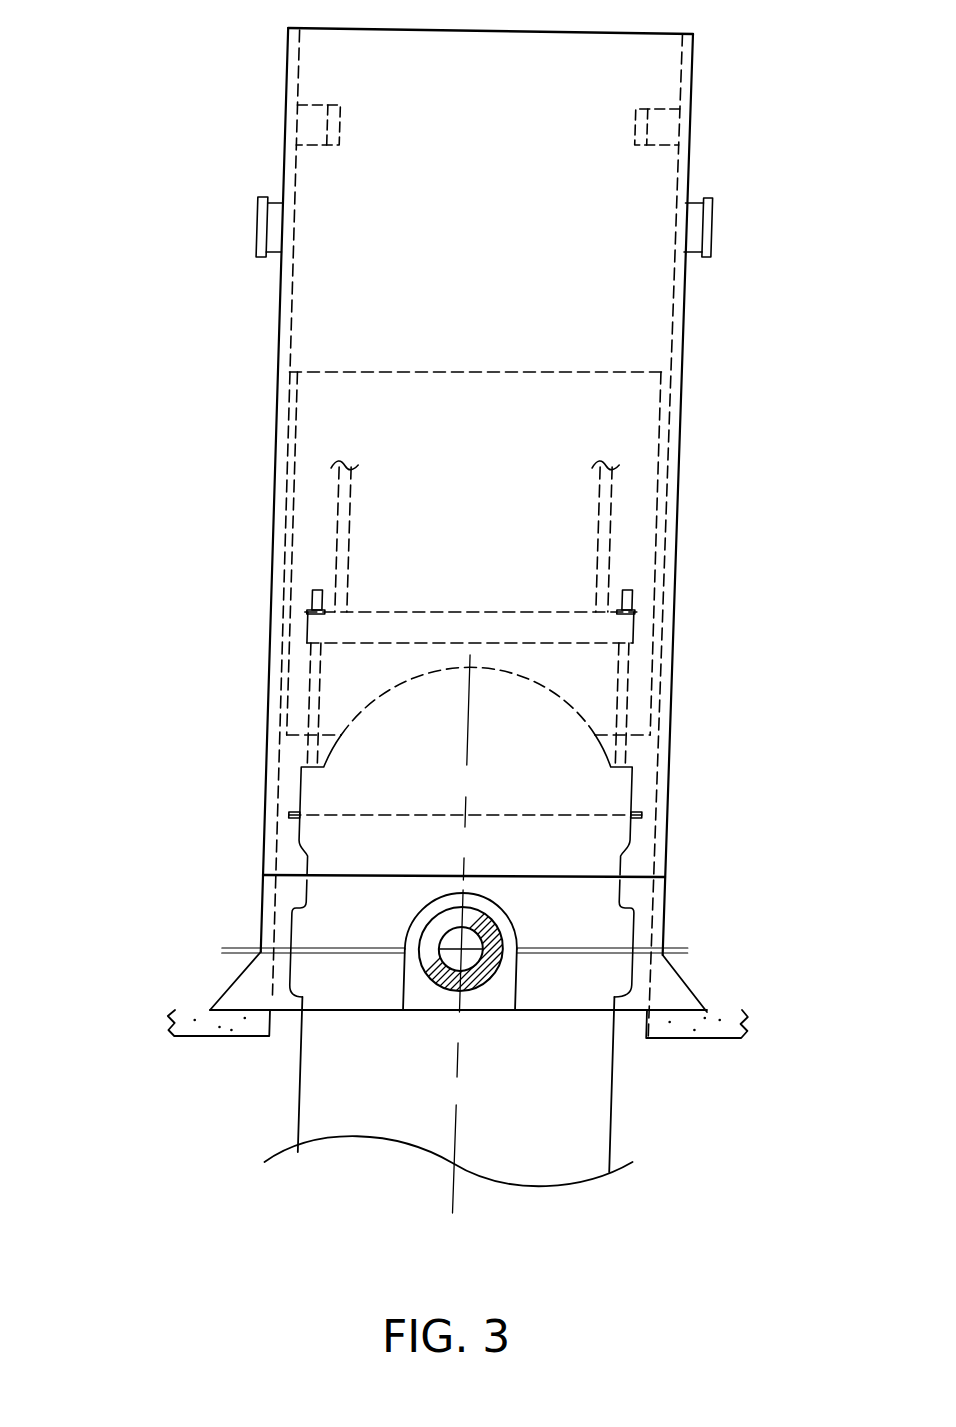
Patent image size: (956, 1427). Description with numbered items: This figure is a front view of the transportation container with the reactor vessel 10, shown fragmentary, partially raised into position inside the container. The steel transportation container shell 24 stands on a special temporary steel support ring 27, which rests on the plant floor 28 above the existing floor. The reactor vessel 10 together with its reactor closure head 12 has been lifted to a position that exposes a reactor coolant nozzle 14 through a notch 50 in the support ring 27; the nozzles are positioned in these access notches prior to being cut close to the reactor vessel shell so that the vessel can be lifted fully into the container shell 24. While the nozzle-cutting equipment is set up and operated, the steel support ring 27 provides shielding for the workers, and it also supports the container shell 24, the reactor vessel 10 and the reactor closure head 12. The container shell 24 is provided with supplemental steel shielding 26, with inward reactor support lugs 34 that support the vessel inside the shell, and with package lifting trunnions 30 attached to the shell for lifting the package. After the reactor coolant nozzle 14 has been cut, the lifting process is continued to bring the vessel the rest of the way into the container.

The reactor vessel 10 is at (300, 1115).
The reactor closure head 12 is at (318, 793).
The reactor coolant nozzle 14 is at (497, 933).
The transportation container shell 24 is at (278, 317).
The supplemental steel shielding 26 is at (658, 545).
The special temporary support ring 27 is at (223, 982).
The plant floor 28 is at (735, 1011).
The package lifting trunnion 30 is at (255, 220).
The inward reactor support lug 34 is at (314, 126).
The notch 50 is at (510, 1000).